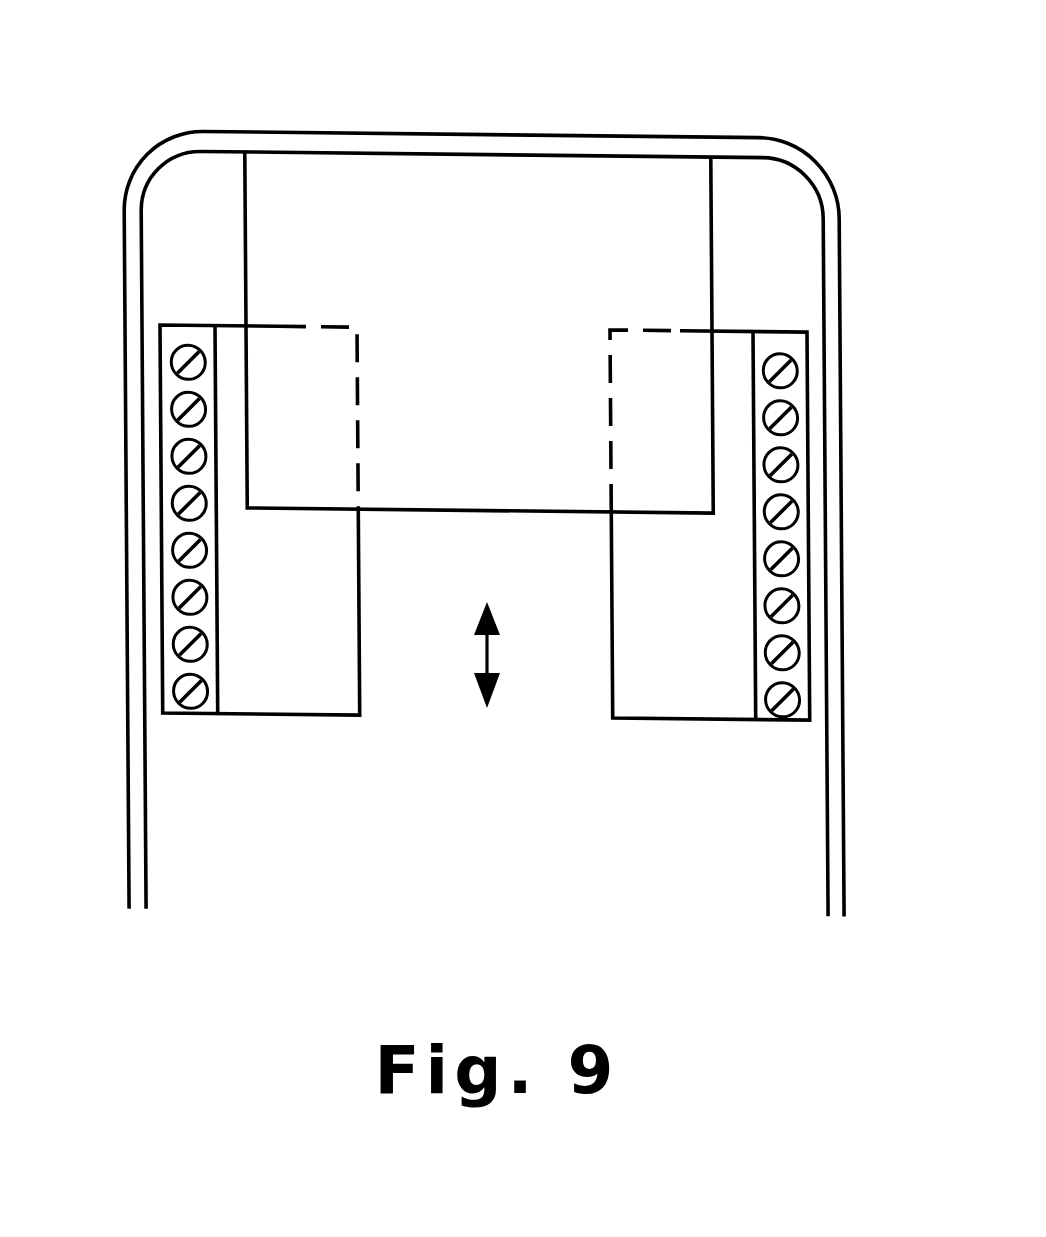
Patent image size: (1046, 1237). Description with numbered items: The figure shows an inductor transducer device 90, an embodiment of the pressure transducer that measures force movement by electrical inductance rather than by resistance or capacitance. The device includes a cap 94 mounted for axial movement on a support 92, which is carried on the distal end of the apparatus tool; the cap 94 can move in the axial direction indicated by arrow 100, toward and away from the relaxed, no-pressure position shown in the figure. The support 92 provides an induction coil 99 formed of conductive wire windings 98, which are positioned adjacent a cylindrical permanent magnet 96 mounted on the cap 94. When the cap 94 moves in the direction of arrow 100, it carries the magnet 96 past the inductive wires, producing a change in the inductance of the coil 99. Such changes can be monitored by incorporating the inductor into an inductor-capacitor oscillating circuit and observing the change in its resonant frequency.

The inductor transducer device 90 is at (362, 82).
The support 92 is at (300, 700).
The cap 94 is at (833, 589).
The cylindrical permanent magnet 96 is at (495, 461).
The conductive wire windings 98 is at (172, 598).
The induction coil 99 is at (173, 657).
The arrow 100 is at (493, 652).